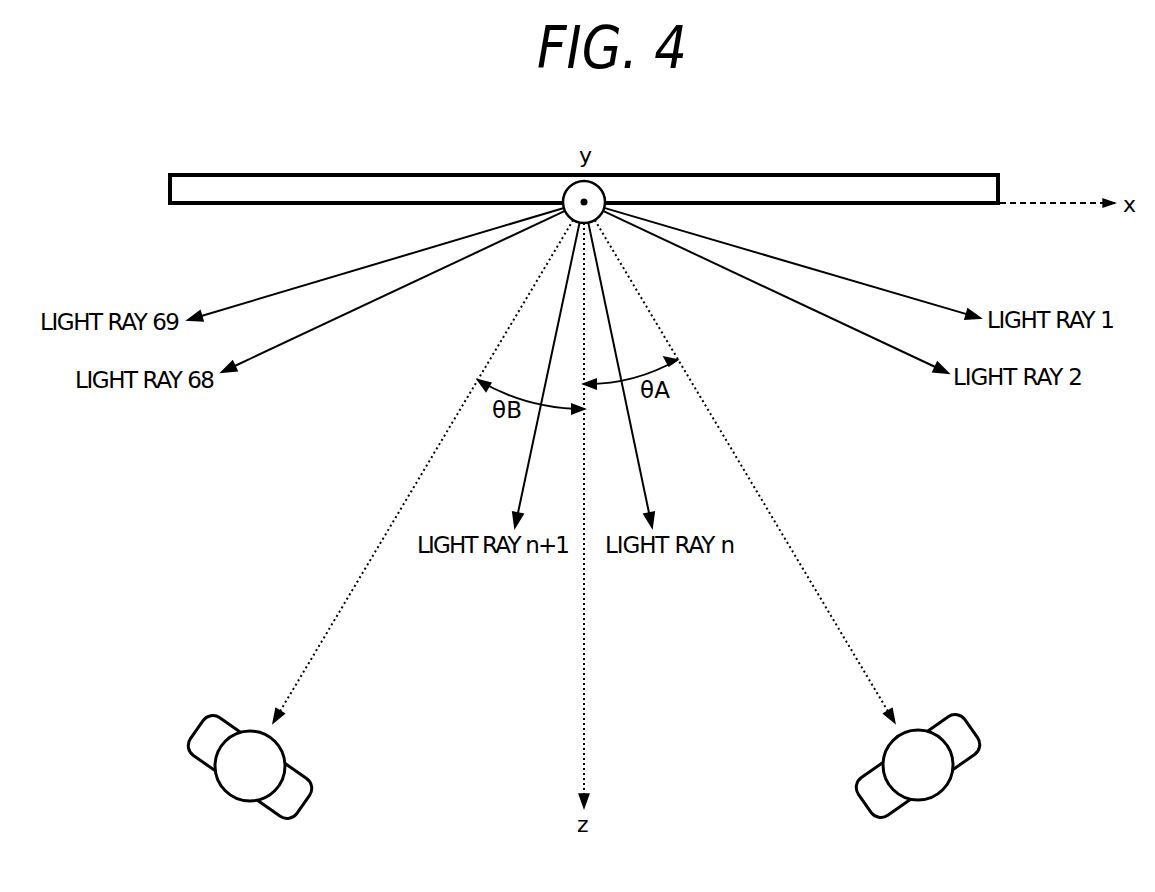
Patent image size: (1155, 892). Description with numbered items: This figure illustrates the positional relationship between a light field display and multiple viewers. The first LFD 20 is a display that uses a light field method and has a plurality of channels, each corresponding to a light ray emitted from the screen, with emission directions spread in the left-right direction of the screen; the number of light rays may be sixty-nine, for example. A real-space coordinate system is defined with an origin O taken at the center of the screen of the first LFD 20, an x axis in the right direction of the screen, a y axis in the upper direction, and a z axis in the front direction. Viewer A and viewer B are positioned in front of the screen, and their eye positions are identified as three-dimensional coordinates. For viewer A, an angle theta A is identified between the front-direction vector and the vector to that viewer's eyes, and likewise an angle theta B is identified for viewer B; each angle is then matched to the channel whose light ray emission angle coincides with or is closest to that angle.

The first LFD 20 is at (170, 188).
The origin O is at (584, 202).
The viewer A is at (937, 797).
The viewer B is at (228, 793).